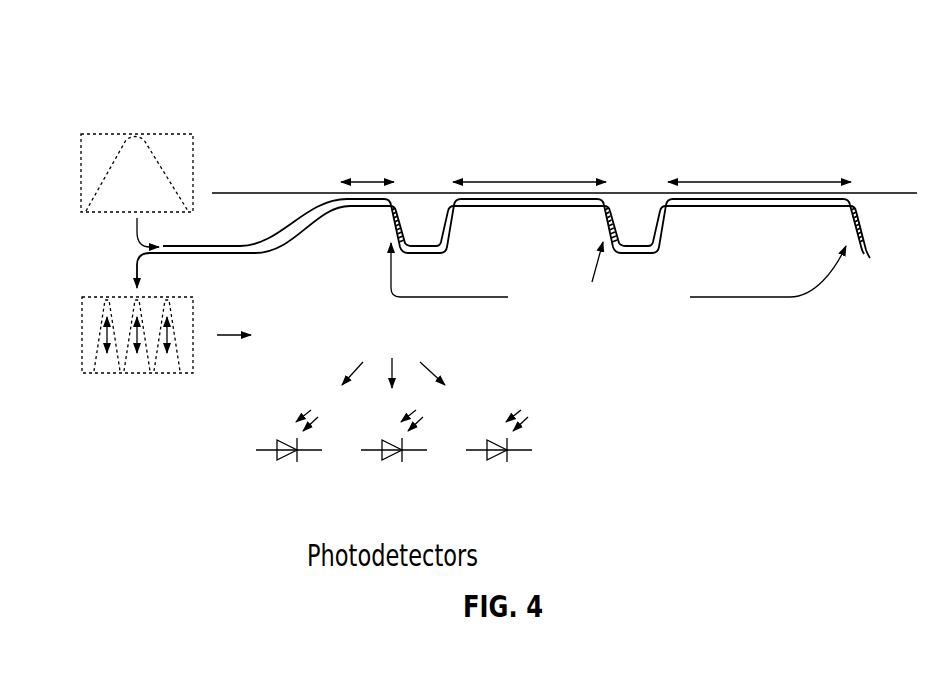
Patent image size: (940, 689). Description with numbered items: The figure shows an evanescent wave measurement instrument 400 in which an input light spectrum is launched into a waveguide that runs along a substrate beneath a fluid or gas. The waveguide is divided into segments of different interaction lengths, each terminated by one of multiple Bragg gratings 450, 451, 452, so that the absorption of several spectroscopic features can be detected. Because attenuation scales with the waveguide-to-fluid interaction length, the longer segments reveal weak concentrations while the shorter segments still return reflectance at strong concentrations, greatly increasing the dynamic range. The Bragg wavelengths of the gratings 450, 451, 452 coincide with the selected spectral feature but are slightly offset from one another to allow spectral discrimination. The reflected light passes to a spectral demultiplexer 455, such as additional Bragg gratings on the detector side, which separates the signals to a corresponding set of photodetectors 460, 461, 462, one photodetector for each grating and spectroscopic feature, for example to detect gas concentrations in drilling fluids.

The instrument 400 is at (716, 56).
The Bragg grating 450 is at (393, 229).
The Bragg grating 451 is at (604, 229).
The Bragg grating 452 is at (849, 229).
The spectral demultiplexer 455 is at (522, 338).
The photodetector 460 is at (277, 465).
The photodetector 461 is at (382, 465).
The photodetector 462 is at (487, 465).